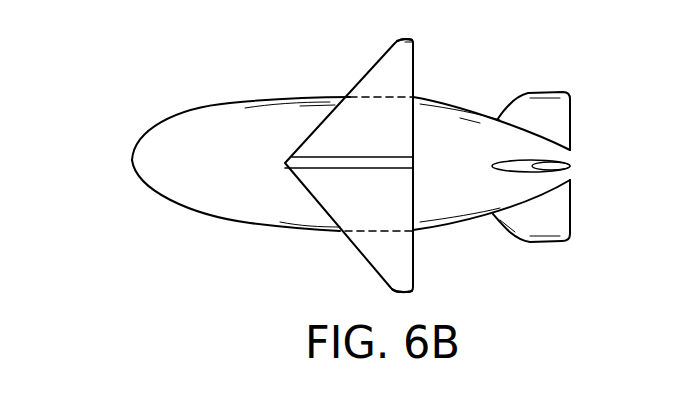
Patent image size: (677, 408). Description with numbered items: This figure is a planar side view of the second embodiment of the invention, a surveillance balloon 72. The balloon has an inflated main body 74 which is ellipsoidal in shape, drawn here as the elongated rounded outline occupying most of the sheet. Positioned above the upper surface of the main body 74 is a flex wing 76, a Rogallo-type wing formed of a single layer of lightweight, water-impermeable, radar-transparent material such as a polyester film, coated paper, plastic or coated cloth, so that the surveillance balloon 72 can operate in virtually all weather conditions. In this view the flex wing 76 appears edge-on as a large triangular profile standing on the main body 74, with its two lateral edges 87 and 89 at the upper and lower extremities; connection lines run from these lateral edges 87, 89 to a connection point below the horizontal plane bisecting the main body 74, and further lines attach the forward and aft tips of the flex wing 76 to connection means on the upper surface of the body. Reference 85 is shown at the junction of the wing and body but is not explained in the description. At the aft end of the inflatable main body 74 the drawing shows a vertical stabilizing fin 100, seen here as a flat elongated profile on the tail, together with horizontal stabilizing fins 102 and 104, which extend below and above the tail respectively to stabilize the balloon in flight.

The surveillance balloon 72 is at (248, 224).
The main body 74 is at (176, 177).
The flex wing 76 is at (403, 71).
The fin root 85 is at (290, 161).
The lateral edge 87 is at (406, 39).
The lateral edge 89 is at (413, 292).
The vertical stabilizing fin 100 is at (558, 158).
The horizontal stabilizing fin 102 is at (543, 230).
The horizontal stabilizing fin 104 is at (557, 118).